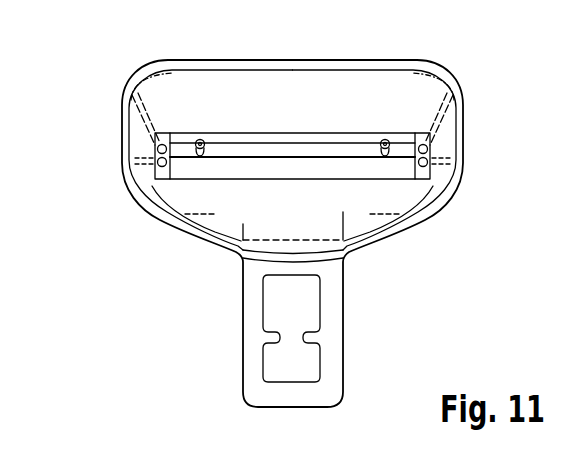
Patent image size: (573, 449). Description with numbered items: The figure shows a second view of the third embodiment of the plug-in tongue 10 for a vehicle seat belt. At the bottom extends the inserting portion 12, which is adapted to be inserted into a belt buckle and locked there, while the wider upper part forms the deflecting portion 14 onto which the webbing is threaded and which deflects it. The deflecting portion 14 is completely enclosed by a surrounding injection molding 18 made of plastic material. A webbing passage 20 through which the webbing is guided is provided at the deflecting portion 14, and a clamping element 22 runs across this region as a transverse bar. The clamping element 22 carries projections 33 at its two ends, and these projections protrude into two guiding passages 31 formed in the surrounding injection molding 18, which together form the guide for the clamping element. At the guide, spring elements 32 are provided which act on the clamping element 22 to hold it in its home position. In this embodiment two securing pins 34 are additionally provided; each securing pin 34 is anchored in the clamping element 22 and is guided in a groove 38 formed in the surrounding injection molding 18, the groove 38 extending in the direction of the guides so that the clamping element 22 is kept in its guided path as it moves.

The plug-in tongue 10 is at (74, 91).
The inserting portion 12 is at (332, 337).
The deflecting portion 14 is at (423, 88).
The surrounding injection molding 18 is at (315, 136).
The webbing passage 20 is at (213, 194).
The clamping element 22 is at (193, 173).
The guiding passages 31 is at (156, 162).
The spring elements 32 is at (152, 149).
The projections 33 is at (156, 177).
The securing pins 34 is at (200, 138).
The groove 38 is at (207, 152).